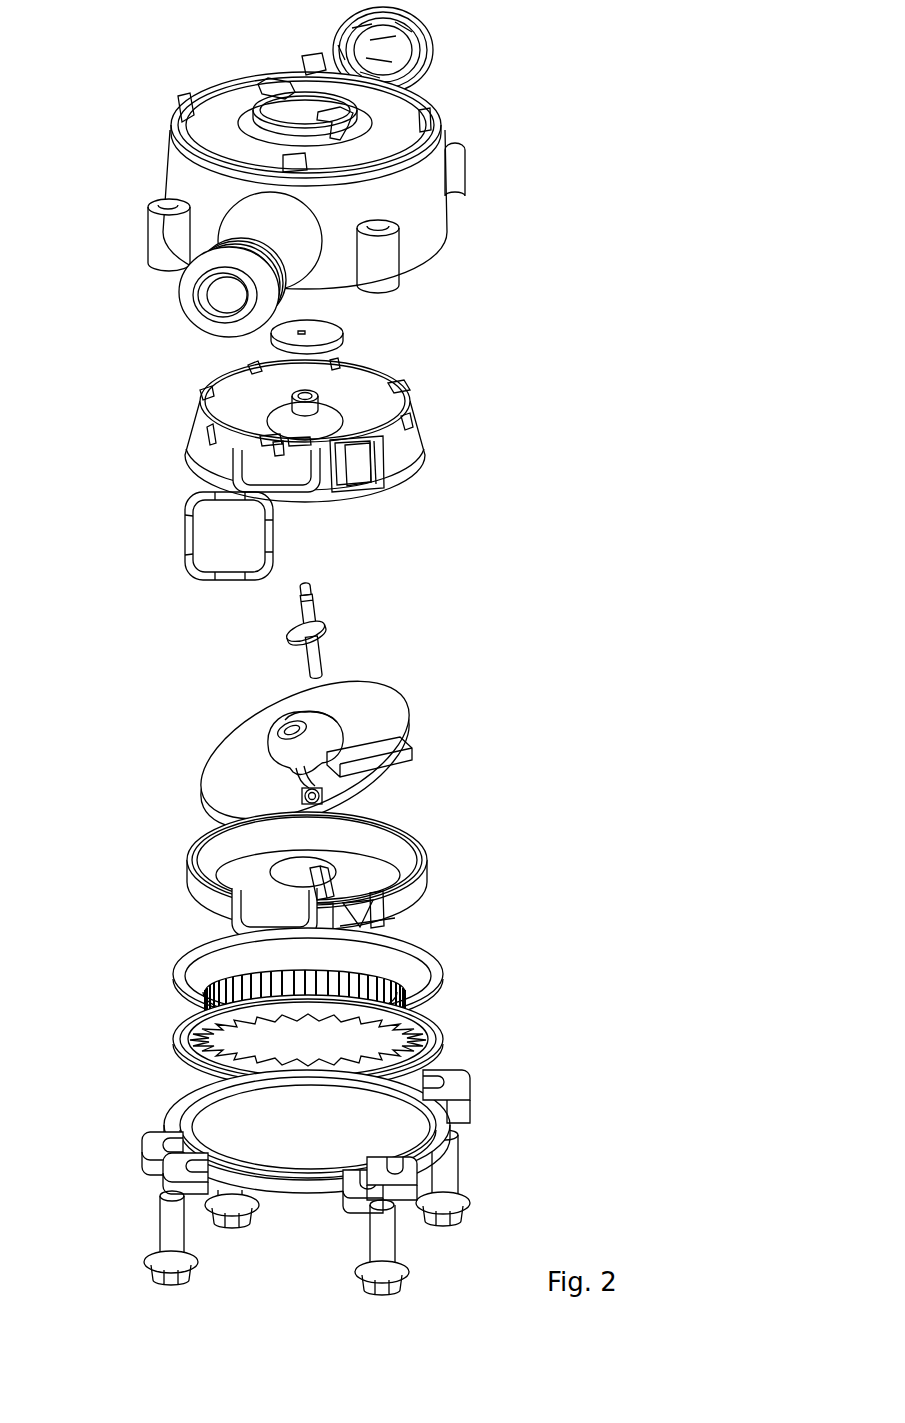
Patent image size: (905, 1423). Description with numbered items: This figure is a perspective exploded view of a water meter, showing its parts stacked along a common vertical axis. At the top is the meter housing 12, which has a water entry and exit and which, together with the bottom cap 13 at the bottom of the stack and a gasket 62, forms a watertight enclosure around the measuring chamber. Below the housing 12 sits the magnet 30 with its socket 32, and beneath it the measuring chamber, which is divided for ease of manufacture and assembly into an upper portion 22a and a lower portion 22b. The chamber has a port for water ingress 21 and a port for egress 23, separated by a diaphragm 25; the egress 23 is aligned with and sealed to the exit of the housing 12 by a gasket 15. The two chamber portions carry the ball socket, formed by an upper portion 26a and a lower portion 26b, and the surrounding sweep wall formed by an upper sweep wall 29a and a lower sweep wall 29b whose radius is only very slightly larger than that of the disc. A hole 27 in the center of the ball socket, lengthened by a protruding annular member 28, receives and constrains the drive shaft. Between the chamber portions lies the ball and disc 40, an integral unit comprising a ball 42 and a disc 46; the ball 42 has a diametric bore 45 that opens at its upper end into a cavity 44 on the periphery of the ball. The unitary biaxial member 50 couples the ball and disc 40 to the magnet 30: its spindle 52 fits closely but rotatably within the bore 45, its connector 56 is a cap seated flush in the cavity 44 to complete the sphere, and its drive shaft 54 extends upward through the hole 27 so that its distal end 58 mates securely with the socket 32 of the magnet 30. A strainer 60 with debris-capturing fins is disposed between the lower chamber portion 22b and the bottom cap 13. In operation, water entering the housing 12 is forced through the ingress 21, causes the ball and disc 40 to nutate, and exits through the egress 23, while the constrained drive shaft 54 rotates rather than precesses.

The housing 12 is at (405, 220).
The bottom cap 13 is at (438, 1145).
The gasket 15 is at (183, 538).
The ingress port 21 is at (350, 930).
The upper portion of measuring chamber 22a is at (200, 395).
The lower portion of measuring chamber 22b is at (323, 895).
The egress port 23 is at (267, 929).
The diaphragm 25 is at (333, 883).
The upper portion of ball socket 26a is at (325, 425).
The lower portion of ball socket 26b is at (327, 868).
The hole 27 is at (307, 393).
The annular member 28 is at (320, 408).
The upper sweep wall 29a is at (408, 455).
The lower sweep wall 29b is at (400, 908).
The magnet 30 is at (325, 337).
The socket 32 is at (306, 333).
The ball and disc 40 is at (310, 755).
The ball 42 is at (330, 732).
The cavity 44 is at (313, 713).
The bore 45 is at (293, 727).
The disc 46 is at (383, 737).
The unitary biaxial member 50 is at (331, 625).
The spindle 52 is at (308, 656).
The drive shaft 54 is at (312, 610).
The connector 56 is at (277, 626).
The distal end 58 is at (308, 587).
The strainer 60 is at (183, 1040).
The gasket 62 is at (180, 977).